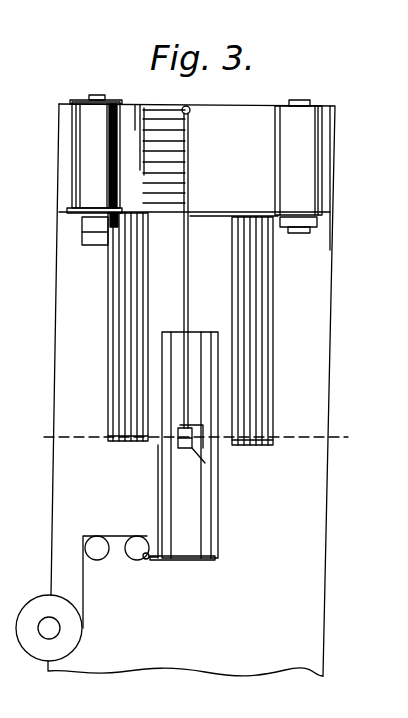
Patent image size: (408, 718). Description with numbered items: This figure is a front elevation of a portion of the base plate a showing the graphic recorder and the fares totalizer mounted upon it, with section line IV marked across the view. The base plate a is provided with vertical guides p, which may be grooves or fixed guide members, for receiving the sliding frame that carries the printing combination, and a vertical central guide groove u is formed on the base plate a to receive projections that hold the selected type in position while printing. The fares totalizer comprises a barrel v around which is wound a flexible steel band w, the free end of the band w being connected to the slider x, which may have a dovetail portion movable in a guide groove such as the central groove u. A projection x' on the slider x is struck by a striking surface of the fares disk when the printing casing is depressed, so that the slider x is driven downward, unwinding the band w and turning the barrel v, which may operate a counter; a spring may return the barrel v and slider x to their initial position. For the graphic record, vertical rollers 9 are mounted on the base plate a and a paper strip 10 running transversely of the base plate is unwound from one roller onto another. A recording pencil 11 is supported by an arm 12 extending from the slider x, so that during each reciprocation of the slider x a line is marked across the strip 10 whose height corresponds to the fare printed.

The vertical rollers 9 is at (315, 202).
The paper strip 10 is at (214, 205).
The recording pencil 11 is at (190, 154).
The arm 12 is at (189, 303).
The base plate a is at (191, 390).
The vertical guides p is at (132, 444).
The projection x' is at (223, 474).
The slider x is at (182, 573).
The central guide groove u is at (213, 523).
The flexible steel band w is at (84, 594).
The barrel v is at (38, 596).
The section line IV is at (194, 441).